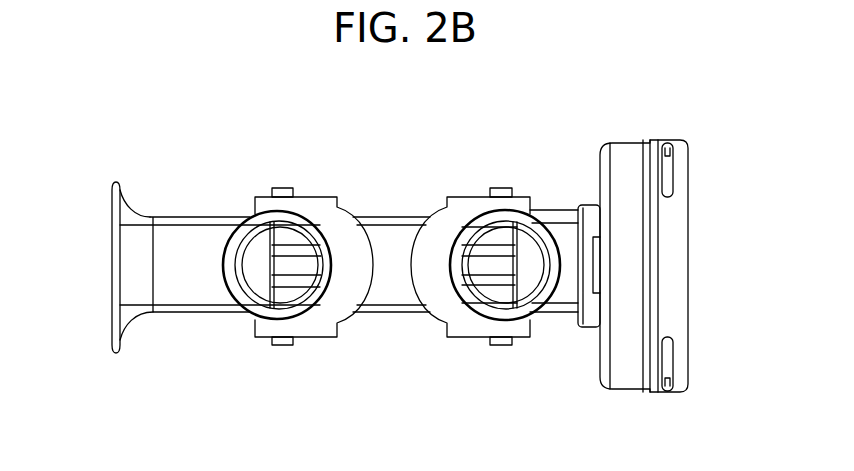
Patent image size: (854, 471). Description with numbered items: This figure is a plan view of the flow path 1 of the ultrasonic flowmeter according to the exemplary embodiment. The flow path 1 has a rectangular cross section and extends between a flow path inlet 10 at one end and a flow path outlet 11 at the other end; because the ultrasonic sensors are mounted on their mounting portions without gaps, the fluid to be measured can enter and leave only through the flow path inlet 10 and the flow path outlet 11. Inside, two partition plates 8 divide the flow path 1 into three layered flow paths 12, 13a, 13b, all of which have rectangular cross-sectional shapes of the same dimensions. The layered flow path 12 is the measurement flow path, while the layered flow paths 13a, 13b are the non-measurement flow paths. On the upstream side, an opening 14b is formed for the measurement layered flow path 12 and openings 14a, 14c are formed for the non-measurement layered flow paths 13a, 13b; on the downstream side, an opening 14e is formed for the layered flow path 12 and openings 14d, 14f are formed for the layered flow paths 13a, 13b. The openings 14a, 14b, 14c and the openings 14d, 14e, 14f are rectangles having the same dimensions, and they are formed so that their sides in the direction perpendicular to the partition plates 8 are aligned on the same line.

The flow path 1 is at (395, 297).
The partition plates 8 is at (507, 282).
The flow path inlet 10 is at (127, 217).
The flow path outlet 11 is at (620, 167).
The layered flow path 12 is at (305, 265).
The layered flow path 13a is at (284, 220).
The layered flow path 13b is at (300, 293).
The opening 14a is at (293, 233).
The opening 14b is at (280, 265).
The opening 14c is at (280, 297).
The opening 14d is at (500, 233).
The opening 14e is at (492, 270).
The opening 14f is at (483, 297).